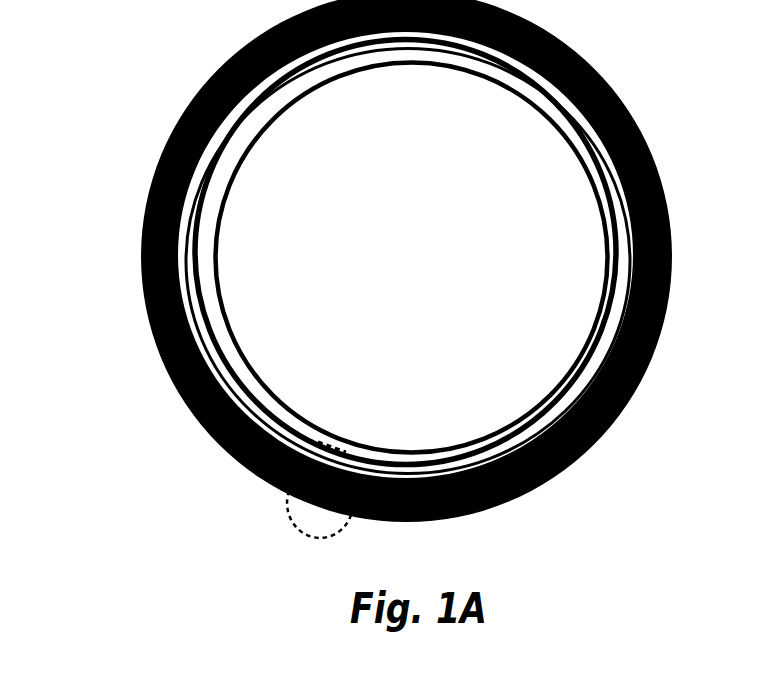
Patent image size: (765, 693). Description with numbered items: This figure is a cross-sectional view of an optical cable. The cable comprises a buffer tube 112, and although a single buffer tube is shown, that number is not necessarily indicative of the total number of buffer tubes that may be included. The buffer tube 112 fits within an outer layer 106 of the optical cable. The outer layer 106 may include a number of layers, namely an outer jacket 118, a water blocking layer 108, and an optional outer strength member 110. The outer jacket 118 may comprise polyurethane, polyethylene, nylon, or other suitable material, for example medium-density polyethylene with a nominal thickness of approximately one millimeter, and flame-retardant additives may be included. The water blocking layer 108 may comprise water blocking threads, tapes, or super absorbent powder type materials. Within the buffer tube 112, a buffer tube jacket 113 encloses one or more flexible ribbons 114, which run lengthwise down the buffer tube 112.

The outer layer 106 is at (293, 521).
The water blocking layer 108 is at (617, 240).
The outer strength member 110 is at (621, 186).
The buffer tube 112 is at (204, 276).
The buffer tube jacket 113 is at (212, 240).
The flexible ribbons 114 is at (426, 264).
The outer jacket 118 is at (628, 404).